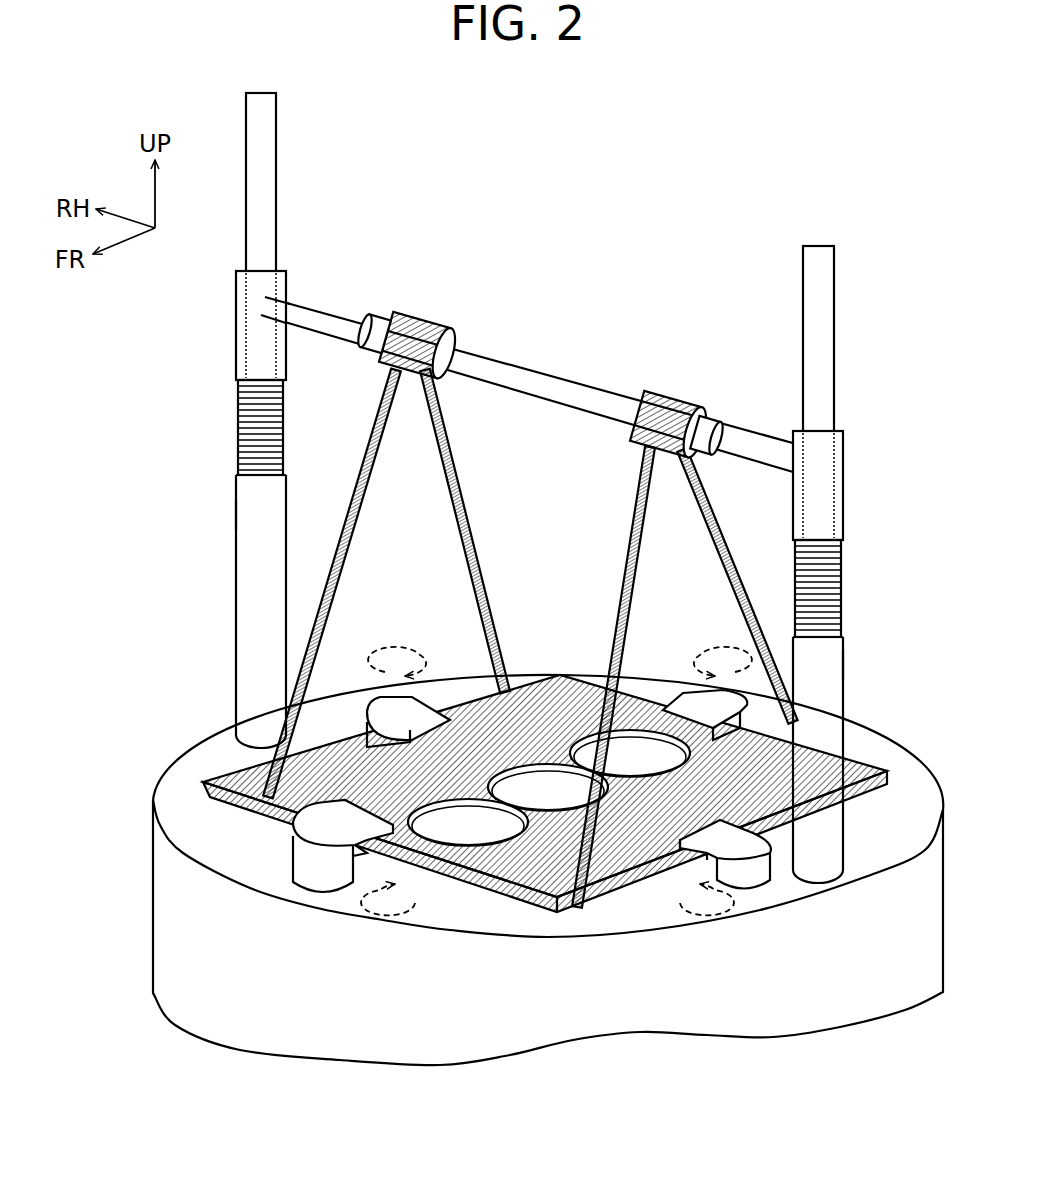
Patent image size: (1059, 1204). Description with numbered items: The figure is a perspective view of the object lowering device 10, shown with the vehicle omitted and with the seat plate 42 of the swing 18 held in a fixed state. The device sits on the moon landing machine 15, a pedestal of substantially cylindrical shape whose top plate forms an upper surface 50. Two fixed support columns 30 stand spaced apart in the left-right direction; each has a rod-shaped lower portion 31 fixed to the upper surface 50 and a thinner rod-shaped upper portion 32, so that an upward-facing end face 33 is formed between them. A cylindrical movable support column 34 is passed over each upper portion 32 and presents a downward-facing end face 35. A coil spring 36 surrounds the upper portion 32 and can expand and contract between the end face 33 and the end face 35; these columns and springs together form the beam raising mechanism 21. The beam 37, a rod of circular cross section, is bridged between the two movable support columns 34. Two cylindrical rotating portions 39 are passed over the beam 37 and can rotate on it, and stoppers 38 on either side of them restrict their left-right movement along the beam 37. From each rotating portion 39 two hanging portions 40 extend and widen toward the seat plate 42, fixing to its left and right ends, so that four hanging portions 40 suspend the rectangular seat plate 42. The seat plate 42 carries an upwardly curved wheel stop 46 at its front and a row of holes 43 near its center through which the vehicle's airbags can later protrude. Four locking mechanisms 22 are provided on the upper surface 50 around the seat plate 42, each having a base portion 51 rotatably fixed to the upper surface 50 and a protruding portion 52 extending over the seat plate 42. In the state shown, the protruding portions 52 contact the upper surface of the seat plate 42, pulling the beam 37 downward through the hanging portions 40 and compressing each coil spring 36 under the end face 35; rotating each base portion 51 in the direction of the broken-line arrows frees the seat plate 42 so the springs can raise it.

The object lowering device 10 is at (536, 500).
The moon landing machine 15 is at (153, 918).
The swing 18 is at (530, 586).
The beam raising mechanism 21 is at (536, 488).
The locking mechanism 22 is at (362, 721).
The fixed support column 30 is at (236, 553).
The lower portion 31 is at (236, 511).
The upper portion 32 is at (246, 172).
The end face 33 is at (236, 475).
The movable support column 34 is at (236, 320).
The end face 35 is at (238, 381).
The coil spring 36 is at (238, 425).
The beam 37 is at (580, 382).
The stopper 38 is at (375, 320).
The rotating portion 39 is at (420, 318).
The hanging portion 40 is at (348, 548).
The seat plate 42 is at (545, 777).
The hole 43 is at (445, 830).
The wheel stop 46 is at (545, 905).
The upper surface 50 is at (895, 830).
The base portion 51 is at (302, 870).
The protruding portion 52 is at (364, 853).